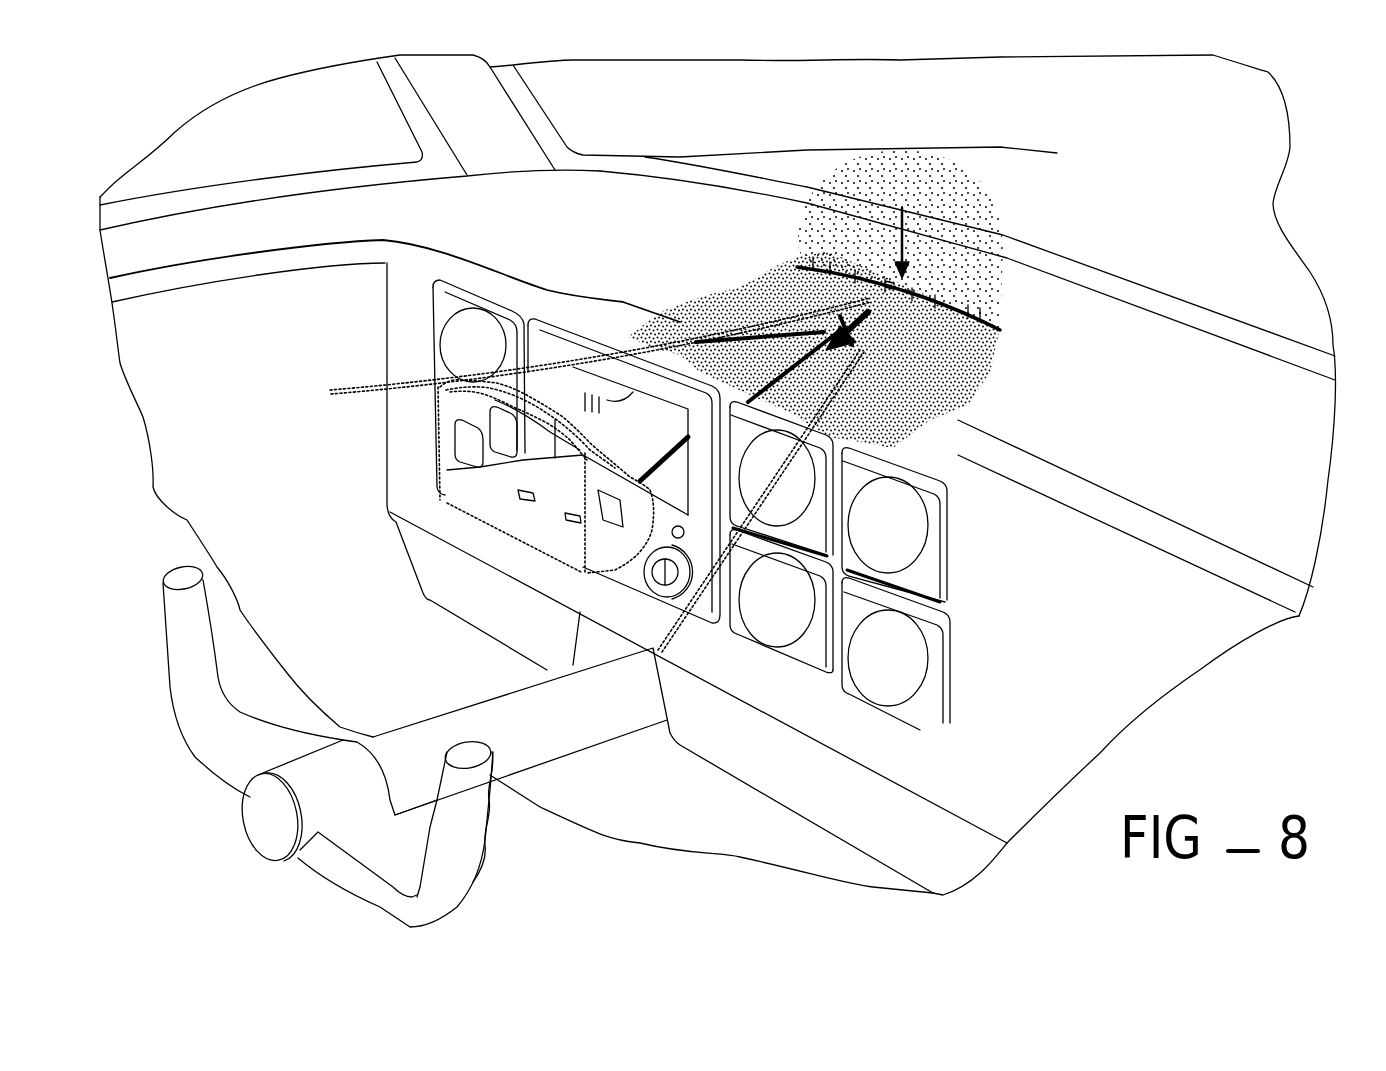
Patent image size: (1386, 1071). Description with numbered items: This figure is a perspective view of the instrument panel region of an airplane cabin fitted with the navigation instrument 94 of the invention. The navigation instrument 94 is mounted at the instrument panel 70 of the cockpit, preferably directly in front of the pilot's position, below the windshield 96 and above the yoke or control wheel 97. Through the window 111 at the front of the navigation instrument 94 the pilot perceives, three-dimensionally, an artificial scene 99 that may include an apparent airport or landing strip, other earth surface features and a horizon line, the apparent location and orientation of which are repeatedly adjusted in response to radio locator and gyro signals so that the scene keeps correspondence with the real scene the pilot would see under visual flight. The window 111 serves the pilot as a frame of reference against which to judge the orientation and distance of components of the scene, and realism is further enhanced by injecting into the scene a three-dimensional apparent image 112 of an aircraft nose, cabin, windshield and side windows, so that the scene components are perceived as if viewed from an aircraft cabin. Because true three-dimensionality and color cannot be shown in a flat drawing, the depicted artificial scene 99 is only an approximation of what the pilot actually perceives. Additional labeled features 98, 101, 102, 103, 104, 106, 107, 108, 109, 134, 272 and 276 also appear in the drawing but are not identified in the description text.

The instrument panel 70 is at (1063, 628).
The navigation instrument 94 is at (658, 312).
The windshield 96 is at (1247, 212).
The yoke or control wheel 97 is at (237, 750).
The roof panel 98 is at (346, 126).
The artificial scene 99 is at (1058, 325).
The pointer line 101 is at (940, 357).
The pointer line 102 is at (935, 345).
The scale line 103 is at (948, 300).
The light spot 104 is at (887, 180).
The index mark 106 is at (980, 308).
The indicator arrow 107 is at (905, 227).
The arrow marker 108 is at (857, 380).
The light beam 109 is at (697, 335).
The window 111 is at (630, 441).
The apparent image 112 is at (545, 380).
The center console panel 134 is at (557, 455).
The switch block 272 is at (573, 513).
The switch block 276 is at (520, 497).